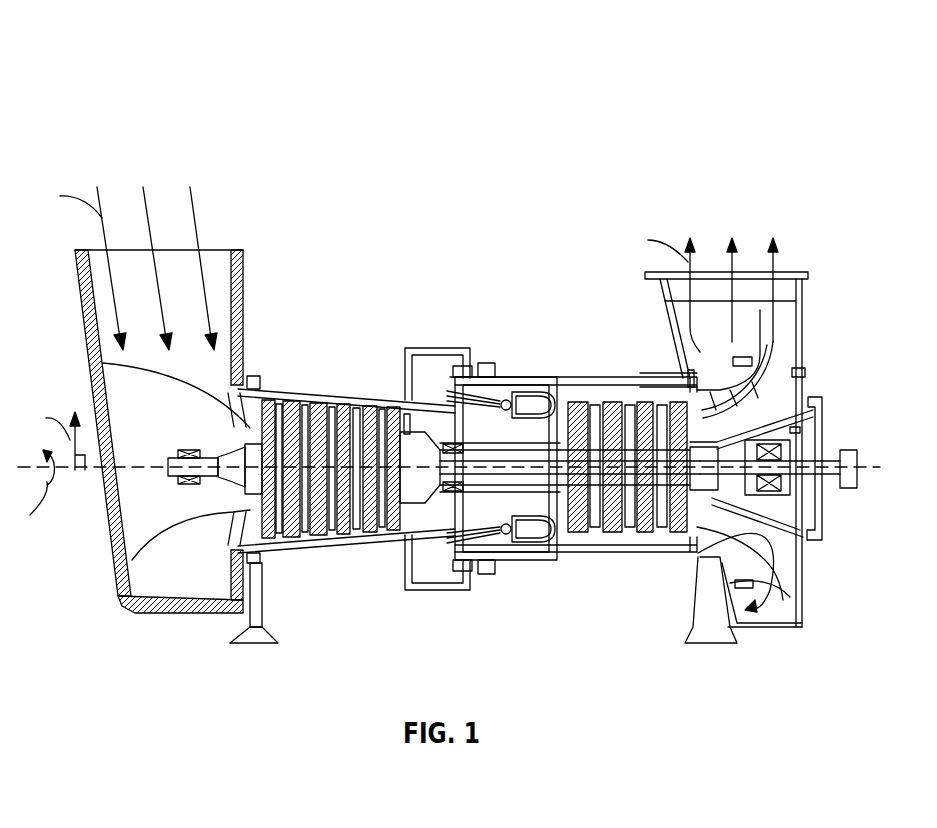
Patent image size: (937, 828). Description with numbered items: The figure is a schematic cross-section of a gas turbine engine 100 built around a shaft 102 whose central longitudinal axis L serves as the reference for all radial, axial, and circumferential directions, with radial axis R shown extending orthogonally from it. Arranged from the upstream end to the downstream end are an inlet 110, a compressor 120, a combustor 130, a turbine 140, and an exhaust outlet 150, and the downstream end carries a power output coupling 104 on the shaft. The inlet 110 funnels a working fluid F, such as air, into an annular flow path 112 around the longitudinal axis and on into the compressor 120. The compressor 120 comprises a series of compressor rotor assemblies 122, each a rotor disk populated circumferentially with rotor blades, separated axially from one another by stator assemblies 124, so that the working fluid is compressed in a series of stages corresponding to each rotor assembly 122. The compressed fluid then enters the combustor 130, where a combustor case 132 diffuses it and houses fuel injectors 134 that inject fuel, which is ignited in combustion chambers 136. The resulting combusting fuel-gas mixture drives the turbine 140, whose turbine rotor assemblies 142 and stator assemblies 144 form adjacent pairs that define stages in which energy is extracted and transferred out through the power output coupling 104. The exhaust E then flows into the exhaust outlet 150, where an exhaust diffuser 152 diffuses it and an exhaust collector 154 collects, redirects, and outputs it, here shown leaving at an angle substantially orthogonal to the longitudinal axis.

The gas turbine engine 100 is at (98, 70).
The shaft 102 is at (177, 457).
The power output coupling 104 is at (850, 450).
The inlet 110 is at (235, 164).
The annular flow path 112 is at (224, 392).
The compressor 120 is at (440, 164).
The compressor rotor assembly 122 is at (292, 535).
The stator assembly 124 is at (330, 400).
The combustor 130 is at (548, 164).
The combustor case 132 is at (502, 390).
The fuel injector 134 is at (482, 366).
The combustion chamber 136 is at (537, 393).
The turbine 140 is at (684, 164).
The turbine rotor assembly 142 is at (675, 548).
The stator assembly 144 is at (653, 392).
The exhaust outlet 150 is at (830, 190).
The exhaust diffuser 152 is at (707, 387).
The exhaust collector 154 is at (660, 305).